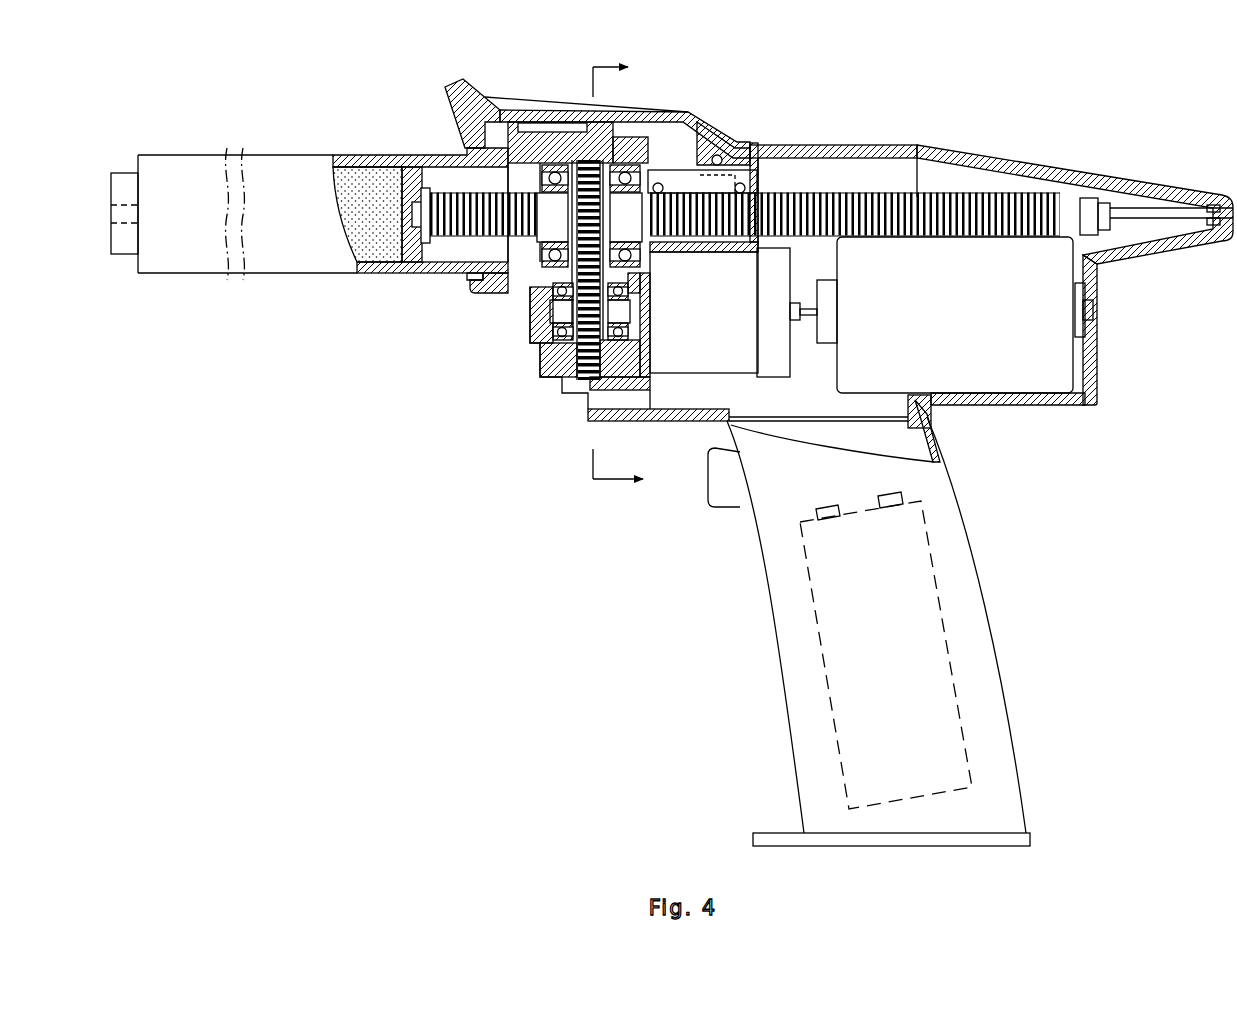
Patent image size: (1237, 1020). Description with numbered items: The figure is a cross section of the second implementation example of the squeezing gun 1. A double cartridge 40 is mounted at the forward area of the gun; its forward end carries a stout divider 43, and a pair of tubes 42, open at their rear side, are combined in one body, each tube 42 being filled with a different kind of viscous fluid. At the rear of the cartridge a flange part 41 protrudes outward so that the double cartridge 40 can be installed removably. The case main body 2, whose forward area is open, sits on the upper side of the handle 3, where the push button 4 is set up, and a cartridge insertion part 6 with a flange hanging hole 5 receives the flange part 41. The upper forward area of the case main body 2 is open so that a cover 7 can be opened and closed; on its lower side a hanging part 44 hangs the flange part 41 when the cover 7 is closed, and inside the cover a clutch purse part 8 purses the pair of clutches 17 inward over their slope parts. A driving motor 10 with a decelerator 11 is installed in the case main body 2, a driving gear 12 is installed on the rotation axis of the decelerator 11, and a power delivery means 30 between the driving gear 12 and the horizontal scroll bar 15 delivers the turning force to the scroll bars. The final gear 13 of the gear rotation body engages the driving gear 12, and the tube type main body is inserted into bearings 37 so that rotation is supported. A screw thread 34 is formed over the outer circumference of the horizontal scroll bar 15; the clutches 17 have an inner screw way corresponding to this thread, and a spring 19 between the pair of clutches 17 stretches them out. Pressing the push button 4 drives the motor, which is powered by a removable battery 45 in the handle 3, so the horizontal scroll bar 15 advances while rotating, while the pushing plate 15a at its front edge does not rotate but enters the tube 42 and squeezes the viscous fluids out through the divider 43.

The squeezing gun 1 is at (508, 517).
The case main body 2 is at (1012, 187).
The handle 3 is at (992, 697).
The push button 4 is at (744, 511).
The flange hanging hole 5 is at (503, 293).
The cartridge insertion part 6 is at (465, 278).
The cover 7 is at (525, 113).
The clutch purse part 8 is at (936, 421).
The driving motor 10 is at (1025, 380).
The decelerator 11 is at (718, 380).
The driving gear 12 is at (580, 367).
The final gear 13 is at (630, 110).
The horizontal scroll bar 15 is at (828, 197).
The pushing plate 15a is at (387, 248).
The clutch 17 is at (685, 183).
The spring 19 is at (735, 148).
The power delivery means 30 is at (550, 278).
The screw thread 34 is at (1027, 237).
The bearing 37 is at (548, 165).
The double cartridge 40 is at (197, 185).
The flange part 41 is at (453, 83).
The tube 42 is at (377, 160).
The divider 43 is at (127, 220).
The hanging part 44 is at (447, 173).
The battery 45 is at (852, 701).